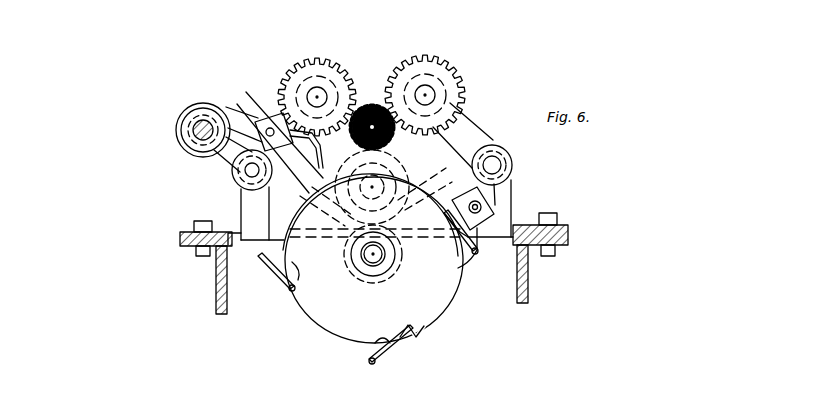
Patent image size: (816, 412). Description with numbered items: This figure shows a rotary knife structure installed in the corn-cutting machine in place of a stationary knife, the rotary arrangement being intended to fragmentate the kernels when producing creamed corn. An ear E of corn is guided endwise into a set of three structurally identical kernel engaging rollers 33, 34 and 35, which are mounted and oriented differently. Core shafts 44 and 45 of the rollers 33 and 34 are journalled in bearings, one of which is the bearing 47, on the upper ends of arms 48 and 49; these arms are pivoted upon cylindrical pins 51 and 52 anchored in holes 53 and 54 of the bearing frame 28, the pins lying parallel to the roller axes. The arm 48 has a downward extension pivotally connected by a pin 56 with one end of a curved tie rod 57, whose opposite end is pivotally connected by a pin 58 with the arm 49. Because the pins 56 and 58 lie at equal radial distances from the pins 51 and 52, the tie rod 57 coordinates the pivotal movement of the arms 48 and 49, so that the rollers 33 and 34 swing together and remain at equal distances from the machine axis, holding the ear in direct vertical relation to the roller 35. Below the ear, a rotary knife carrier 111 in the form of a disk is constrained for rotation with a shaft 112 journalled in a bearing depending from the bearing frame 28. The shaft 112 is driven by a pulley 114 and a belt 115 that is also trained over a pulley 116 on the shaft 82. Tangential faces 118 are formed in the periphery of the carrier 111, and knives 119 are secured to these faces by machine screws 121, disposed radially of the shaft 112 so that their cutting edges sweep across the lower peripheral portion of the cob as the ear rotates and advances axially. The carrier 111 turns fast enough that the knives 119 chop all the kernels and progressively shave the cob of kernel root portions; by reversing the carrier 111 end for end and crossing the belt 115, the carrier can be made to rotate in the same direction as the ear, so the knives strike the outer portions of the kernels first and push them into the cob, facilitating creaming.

The pulley 116 is at (203, 104).
The shaft 82 is at (190, 141).
The bearing 47 is at (288, 73).
The kernel engaging roller 34 is at (306, 61).
The core shaft 45 is at (318, 96).
The ear E is at (372, 97).
The core shaft 44 is at (426, 94).
The kernel engaging roller 33 is at (445, 67).
The arm 49 is at (268, 112).
The pin 58 is at (262, 123).
The arm 48 is at (478, 131).
The pin 51 is at (497, 163).
The hole 53 is at (506, 165).
The pin 52 is at (245, 171).
The belt 115 is at (220, 176).
The hole 54 is at (240, 193).
The curved tie rod 57 is at (300, 173).
The kernel engaging roller 35 is at (398, 157).
The pin 56 is at (468, 198).
The machine screw 121 is at (508, 218).
The bearing frame 28 is at (508, 246).
The knife 119 is at (476, 255).
The tangential face 118 is at (458, 268).
The pulley 114 is at (404, 266).
The shaft 112 is at (378, 259).
The rotary knife carrier 111 is at (428, 325).